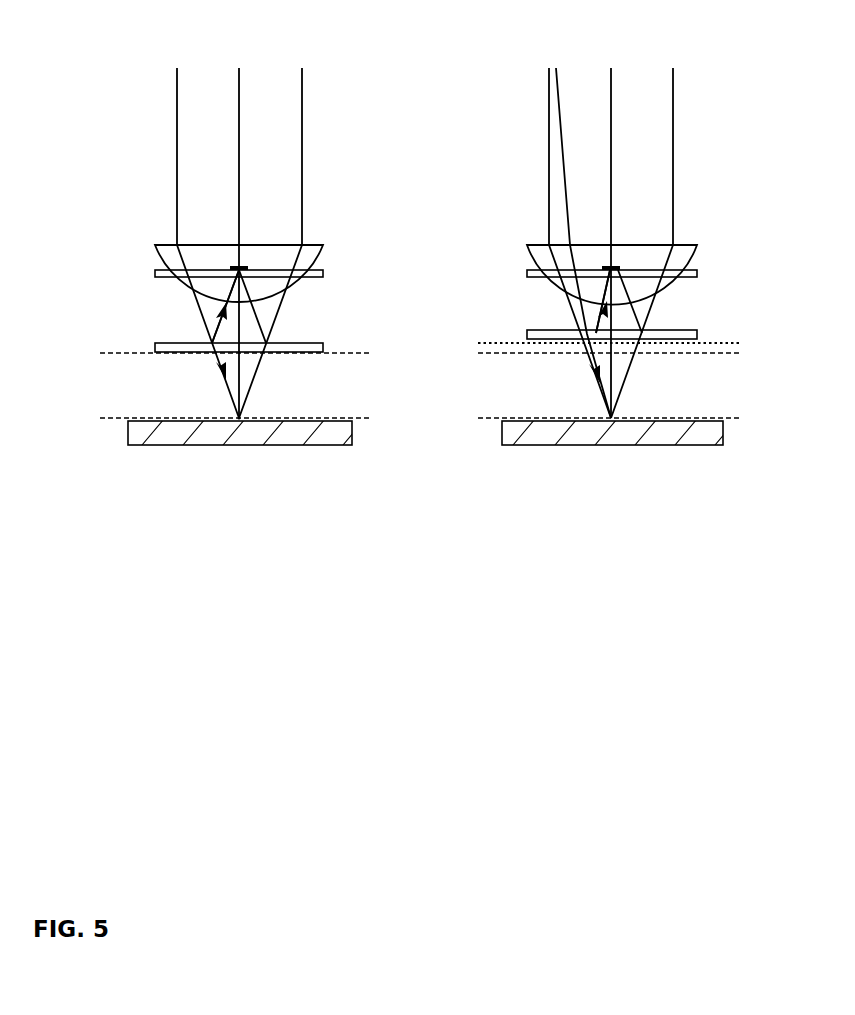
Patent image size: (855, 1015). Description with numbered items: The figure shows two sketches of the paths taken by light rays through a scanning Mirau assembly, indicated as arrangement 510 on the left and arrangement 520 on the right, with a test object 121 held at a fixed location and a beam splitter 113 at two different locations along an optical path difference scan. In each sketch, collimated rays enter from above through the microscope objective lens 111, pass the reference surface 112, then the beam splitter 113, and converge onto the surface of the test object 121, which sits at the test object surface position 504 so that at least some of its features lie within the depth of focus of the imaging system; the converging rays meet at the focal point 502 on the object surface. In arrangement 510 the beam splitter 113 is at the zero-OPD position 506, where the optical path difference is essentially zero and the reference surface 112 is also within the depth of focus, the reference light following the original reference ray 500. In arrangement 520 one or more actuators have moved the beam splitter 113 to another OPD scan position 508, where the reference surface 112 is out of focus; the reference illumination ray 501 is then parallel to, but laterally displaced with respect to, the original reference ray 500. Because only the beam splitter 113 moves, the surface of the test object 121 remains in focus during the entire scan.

The microscope objective lens 111 is at (305, 222).
The reference surface 112 is at (327, 266).
The beam splitter 113 is at (300, 342).
The test object 121 is at (302, 415).
The original reference ray 500 is at (225, 292).
The reference illumination ray 501 is at (607, 294).
The focal point on sample 502 is at (239, 418).
The test object surface position 504 is at (377, 418).
The zero-OPD position 506 is at (377, 353).
The OPD scan position 508 is at (747, 343).
The first arrangement 510 is at (197, 566).
The second arrangement 520 is at (524, 567).